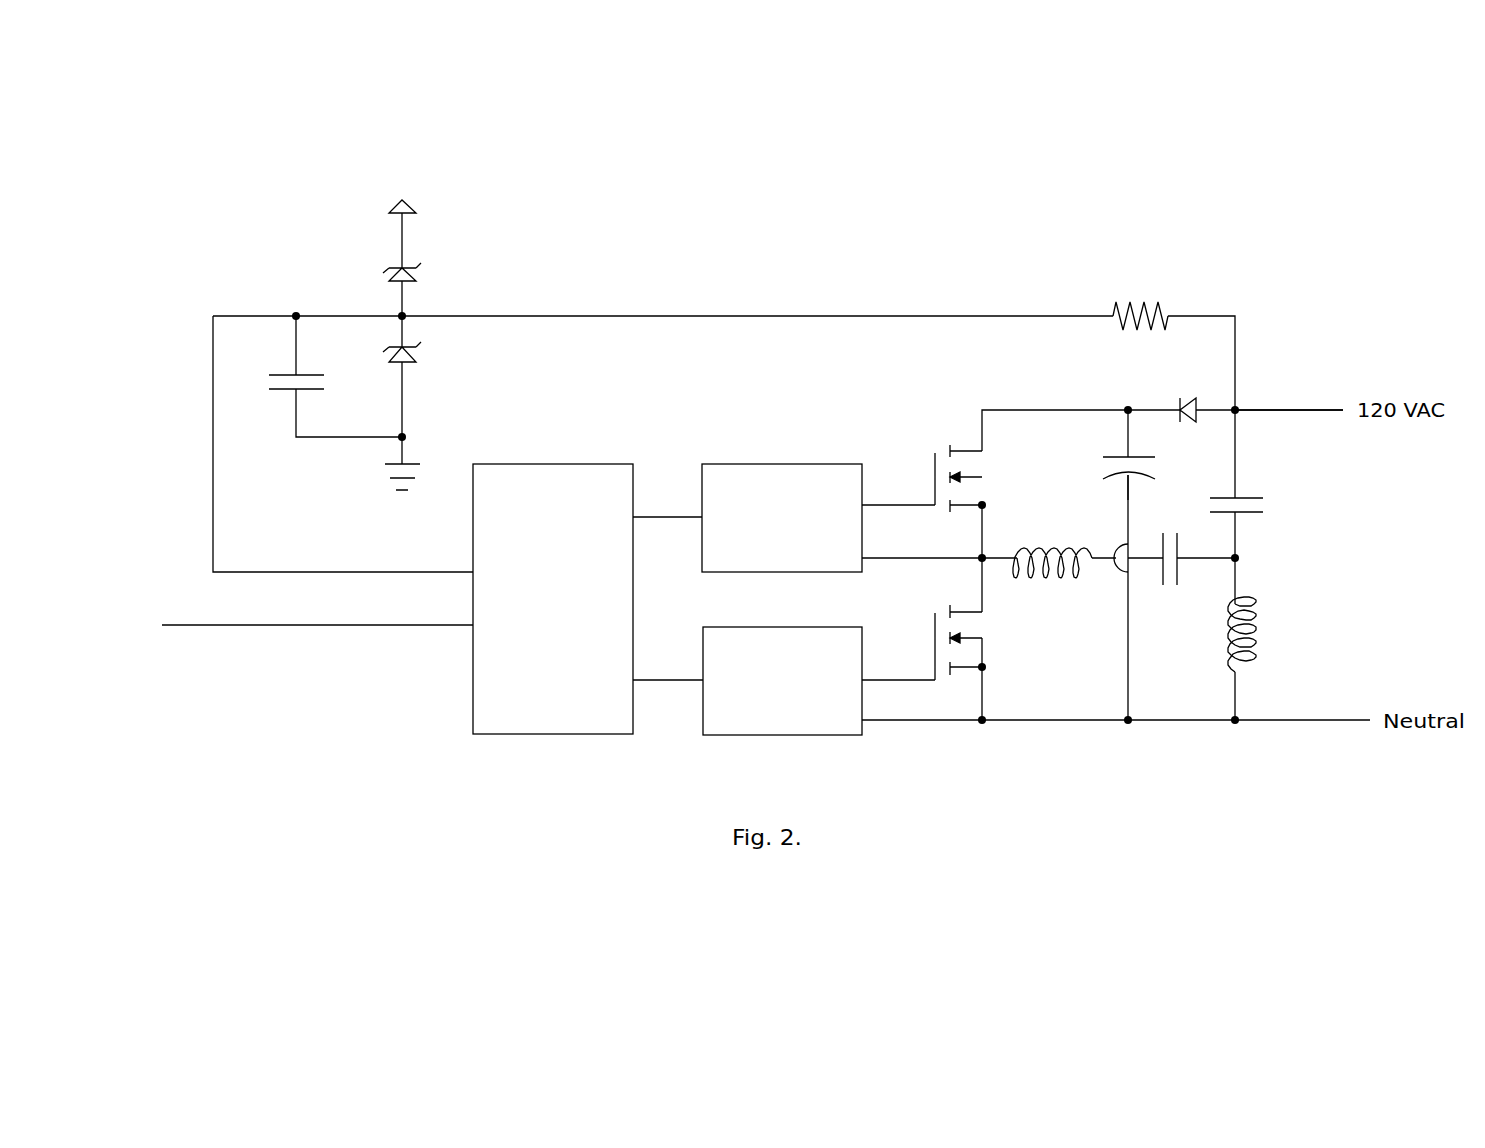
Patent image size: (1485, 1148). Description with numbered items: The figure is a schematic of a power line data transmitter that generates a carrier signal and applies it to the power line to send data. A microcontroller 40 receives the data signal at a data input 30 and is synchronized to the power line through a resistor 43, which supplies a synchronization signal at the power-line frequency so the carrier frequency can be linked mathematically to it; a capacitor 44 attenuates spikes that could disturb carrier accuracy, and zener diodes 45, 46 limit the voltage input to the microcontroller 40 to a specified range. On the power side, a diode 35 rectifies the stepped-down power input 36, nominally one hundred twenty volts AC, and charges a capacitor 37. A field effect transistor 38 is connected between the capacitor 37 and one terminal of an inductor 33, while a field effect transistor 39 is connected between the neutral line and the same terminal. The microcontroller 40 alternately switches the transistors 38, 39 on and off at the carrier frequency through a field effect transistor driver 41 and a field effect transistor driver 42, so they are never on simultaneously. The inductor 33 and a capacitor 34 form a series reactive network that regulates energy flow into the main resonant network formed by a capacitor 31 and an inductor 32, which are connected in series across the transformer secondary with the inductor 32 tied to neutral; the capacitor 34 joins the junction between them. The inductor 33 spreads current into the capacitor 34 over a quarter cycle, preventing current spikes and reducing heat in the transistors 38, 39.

The data input 30 is at (380, 640).
The capacitor 31 is at (1277, 497).
The inductor 32 is at (1277, 622).
The inductor 33 is at (1063, 595).
The capacitor 34 is at (1190, 588).
The diode 35 is at (1170, 392).
The power input 36 is at (1293, 401).
The capacitor 37 is at (1087, 465).
The field effect transistor 38 is at (940, 440).
The field effect transistor 39 is at (940, 600).
The microcontroller 40 is at (523, 448).
The field effect transistor driver 41 is at (772, 449).
The field effect transistor driver 42 is at (780, 613).
The resistor 43 is at (1107, 292).
The capacitor 44 is at (277, 398).
The zener diode 45 is at (437, 248).
The zener diode 46 is at (418, 372).